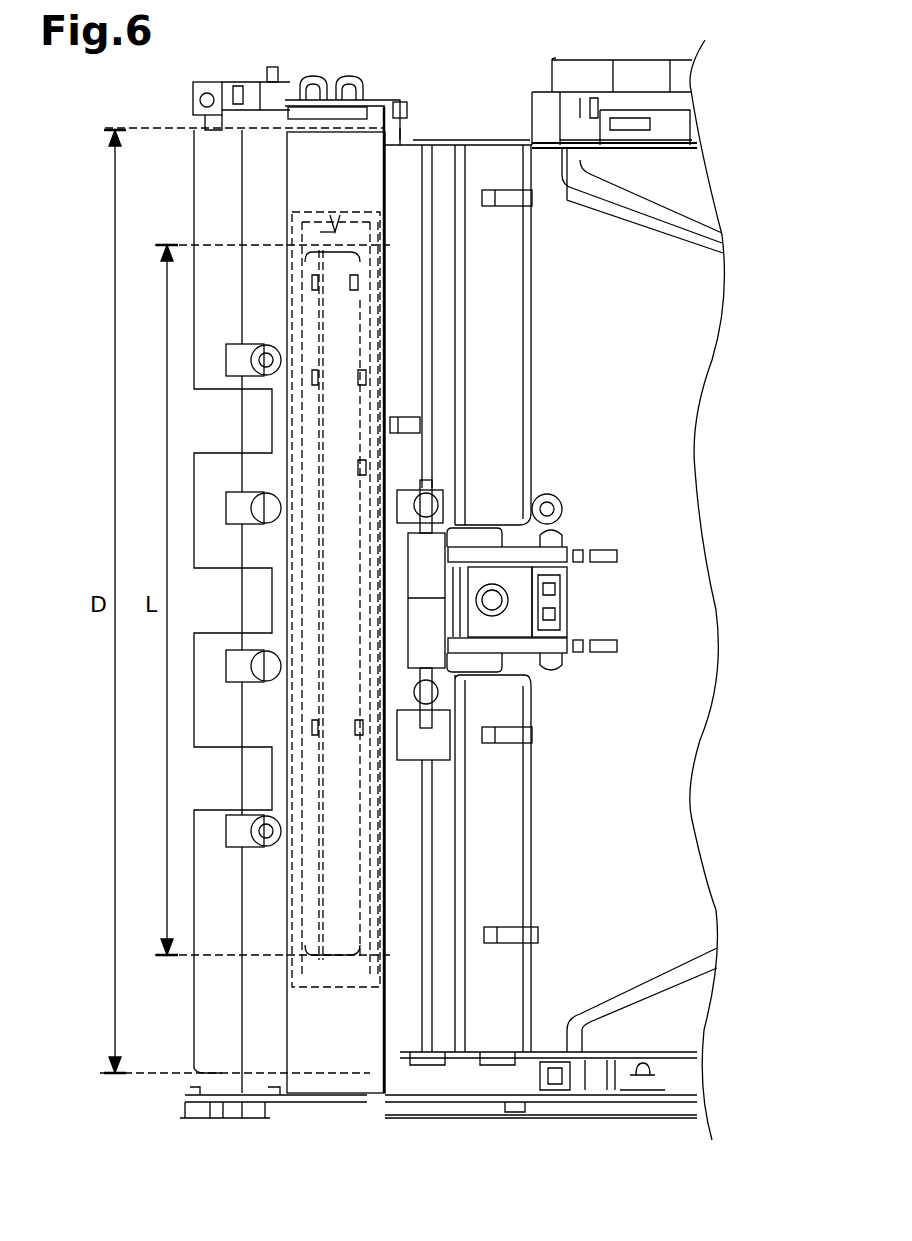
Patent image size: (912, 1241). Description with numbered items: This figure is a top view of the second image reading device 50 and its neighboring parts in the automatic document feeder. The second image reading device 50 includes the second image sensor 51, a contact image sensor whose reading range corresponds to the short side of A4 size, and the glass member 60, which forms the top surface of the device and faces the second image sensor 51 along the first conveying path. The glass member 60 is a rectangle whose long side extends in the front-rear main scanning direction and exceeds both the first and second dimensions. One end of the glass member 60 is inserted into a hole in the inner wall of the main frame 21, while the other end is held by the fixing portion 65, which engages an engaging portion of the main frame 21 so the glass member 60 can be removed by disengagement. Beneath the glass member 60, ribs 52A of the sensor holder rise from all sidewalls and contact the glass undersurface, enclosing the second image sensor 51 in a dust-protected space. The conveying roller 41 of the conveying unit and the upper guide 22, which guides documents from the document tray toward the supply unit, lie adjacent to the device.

The main frame 21 is at (400, 140).
The upper guide 22 is at (676, 464).
The conveying roller 41 is at (427, 553).
The second image reading device 50 is at (387, 193).
The second image sensor 51 is at (338, 382).
The ribs 52A is at (385, 192).
The glass member 60 is at (372, 140).
The fixing portion 65 is at (312, 80).